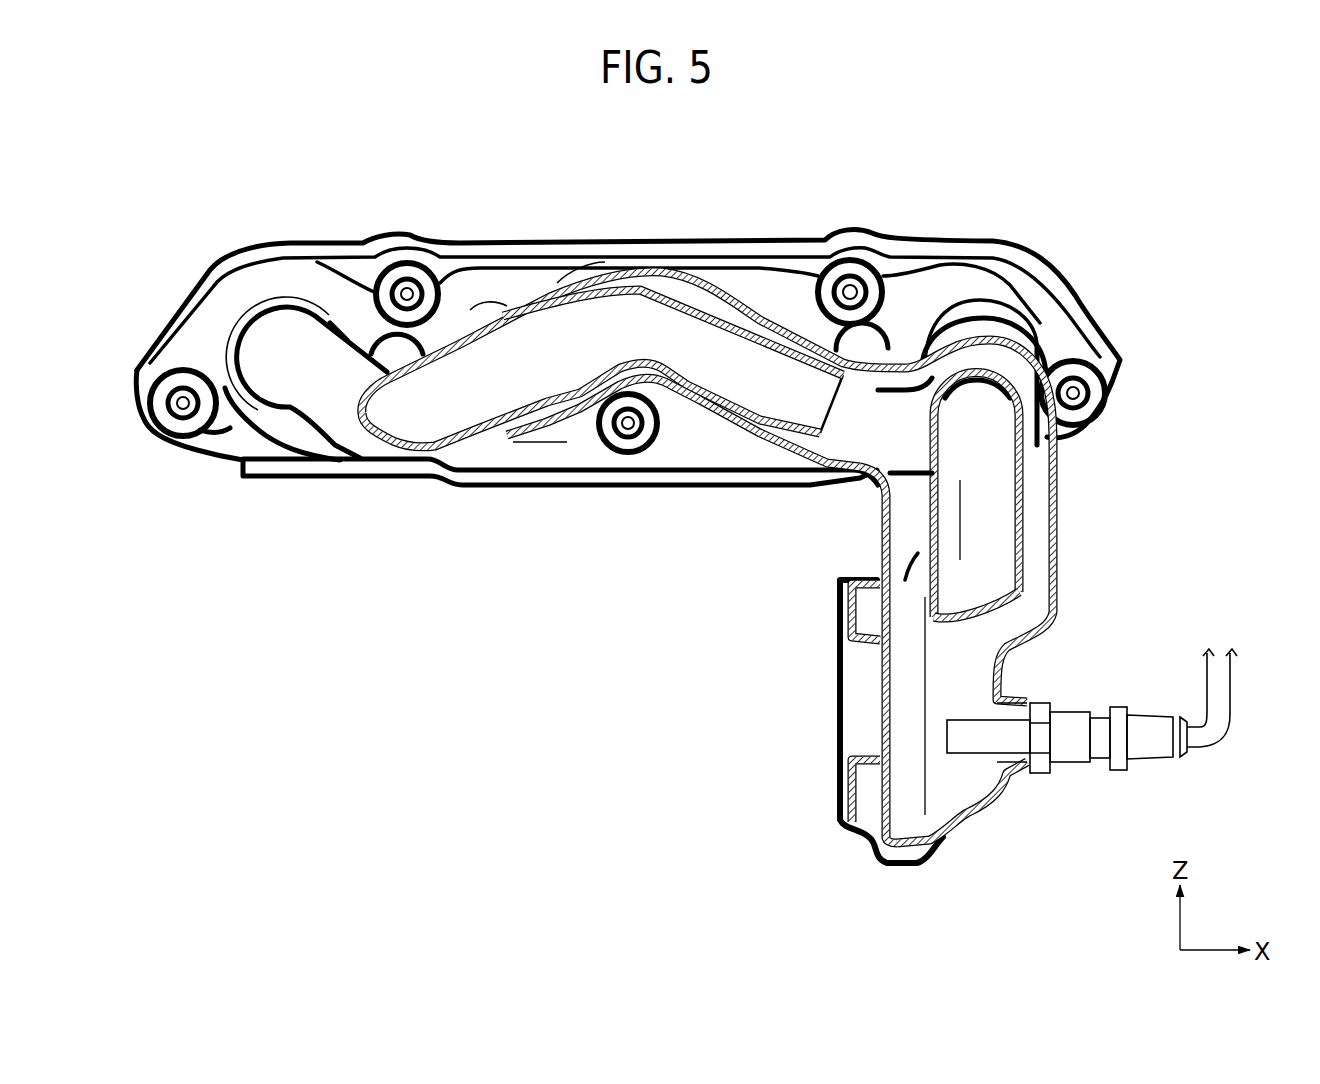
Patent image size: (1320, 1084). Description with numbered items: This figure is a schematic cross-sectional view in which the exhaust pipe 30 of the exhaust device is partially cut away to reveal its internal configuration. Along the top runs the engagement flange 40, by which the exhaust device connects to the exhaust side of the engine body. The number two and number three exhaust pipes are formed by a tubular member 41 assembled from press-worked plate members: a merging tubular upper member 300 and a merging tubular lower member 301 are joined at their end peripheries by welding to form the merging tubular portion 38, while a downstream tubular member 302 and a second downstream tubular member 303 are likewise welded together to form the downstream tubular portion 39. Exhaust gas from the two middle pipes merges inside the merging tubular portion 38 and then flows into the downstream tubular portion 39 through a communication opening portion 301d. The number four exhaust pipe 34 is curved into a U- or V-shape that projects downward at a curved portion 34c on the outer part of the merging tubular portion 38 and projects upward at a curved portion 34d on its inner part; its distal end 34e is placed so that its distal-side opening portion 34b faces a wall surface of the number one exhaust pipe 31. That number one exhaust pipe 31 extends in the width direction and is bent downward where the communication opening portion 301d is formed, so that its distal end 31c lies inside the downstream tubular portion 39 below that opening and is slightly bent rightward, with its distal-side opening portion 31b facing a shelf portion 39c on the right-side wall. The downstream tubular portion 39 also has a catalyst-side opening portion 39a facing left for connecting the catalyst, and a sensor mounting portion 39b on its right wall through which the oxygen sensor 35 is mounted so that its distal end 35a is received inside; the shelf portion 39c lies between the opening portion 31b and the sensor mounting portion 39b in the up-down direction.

The exhaust pipe 30 is at (1052, 232).
The engagement flange 40 is at (497, 238).
The merging tubular upper member 300 is at (660, 265).
The merging tubular portion 38 is at (687, 262).
The merging tubular lower member 301 is at (583, 425).
The communication opening portion 301d is at (907, 490).
The #4 exhaust pipe 34 is at (308, 383).
The distal-side opening portion 34b is at (845, 407).
The curved portion 34c is at (398, 422).
The curved portion 34d is at (630, 328).
The distal end 34e is at (763, 423).
The #1 exhaust pipe 31 is at (1047, 513).
The distal-side opening portion 31b is at (1000, 610).
The distal end 31c is at (992, 571).
The tubular member 41 is at (1075, 480).
The downstream tubular portion 39 is at (965, 828).
The catalyst-side opening portion 39a is at (835, 707).
The sensor mounting portion 39b is at (1020, 688).
The shelf portion 39c is at (1007, 637).
The downstream tubular member 302 is at (1000, 800).
The downstream tubular member 303 is at (860, 800).
The O2 sensor 35 is at (1067, 720).
The sensor detecting portion 35a is at (942, 740).